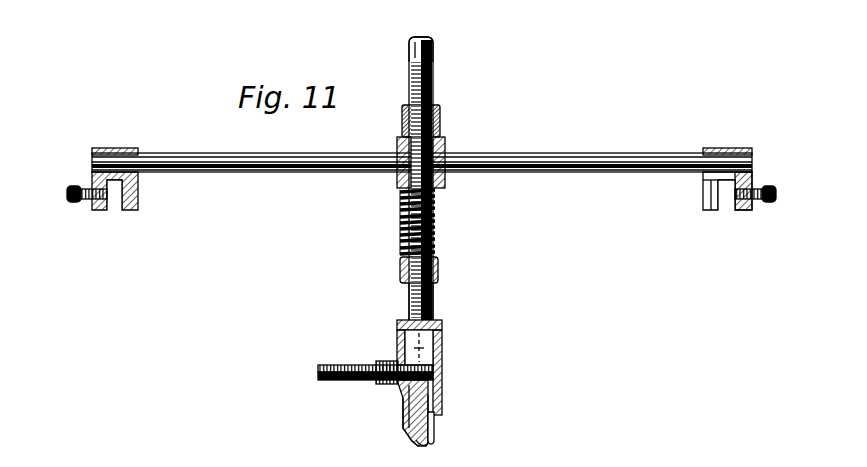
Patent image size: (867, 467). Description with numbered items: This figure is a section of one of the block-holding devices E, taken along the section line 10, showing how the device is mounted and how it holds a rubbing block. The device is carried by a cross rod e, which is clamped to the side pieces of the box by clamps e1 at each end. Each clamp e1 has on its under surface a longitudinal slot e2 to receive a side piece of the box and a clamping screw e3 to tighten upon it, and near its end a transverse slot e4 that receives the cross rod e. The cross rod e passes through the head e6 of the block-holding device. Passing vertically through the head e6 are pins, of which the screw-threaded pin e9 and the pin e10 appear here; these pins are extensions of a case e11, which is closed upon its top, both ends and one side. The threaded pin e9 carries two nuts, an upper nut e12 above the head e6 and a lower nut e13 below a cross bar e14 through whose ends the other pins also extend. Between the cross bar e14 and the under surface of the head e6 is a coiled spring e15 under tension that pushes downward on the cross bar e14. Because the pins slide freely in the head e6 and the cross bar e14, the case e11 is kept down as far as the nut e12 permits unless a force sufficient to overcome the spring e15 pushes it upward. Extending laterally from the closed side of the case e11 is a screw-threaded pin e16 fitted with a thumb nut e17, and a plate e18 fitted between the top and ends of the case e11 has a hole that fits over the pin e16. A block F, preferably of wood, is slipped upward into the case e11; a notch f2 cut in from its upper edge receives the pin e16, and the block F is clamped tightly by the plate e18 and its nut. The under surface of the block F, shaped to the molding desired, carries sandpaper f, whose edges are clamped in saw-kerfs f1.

The section line 10— 10 is at (388, 22).
The cross rod e is at (522, 163).
The clamp e1 is at (139, 167).
The longitudinal slot e2 is at (113, 198).
The clamping screw e3 is at (78, 201).
The transverse slot e4 is at (708, 192).
The head e6 is at (448, 154).
The screw-threaded pin e9 is at (432, 87).
The pin e10 is at (422, 53).
The upper nut e12 is at (440, 134).
The lower nut e13 is at (439, 273).
The cross bar e14 is at (438, 262).
The coiled spring e15 is at (434, 207).
The block-holding device E is at (433, 222).
The case e11 is at (440, 381).
The notch f2 is at (421, 350).
The screw-threaded pin e16 is at (360, 374).
The thumb nut e17 is at (390, 381).
The plate e18 is at (407, 394).
The block F is at (429, 413).
The saw-kerf f1 is at (437, 419).
The sandpaper f is at (431, 442).